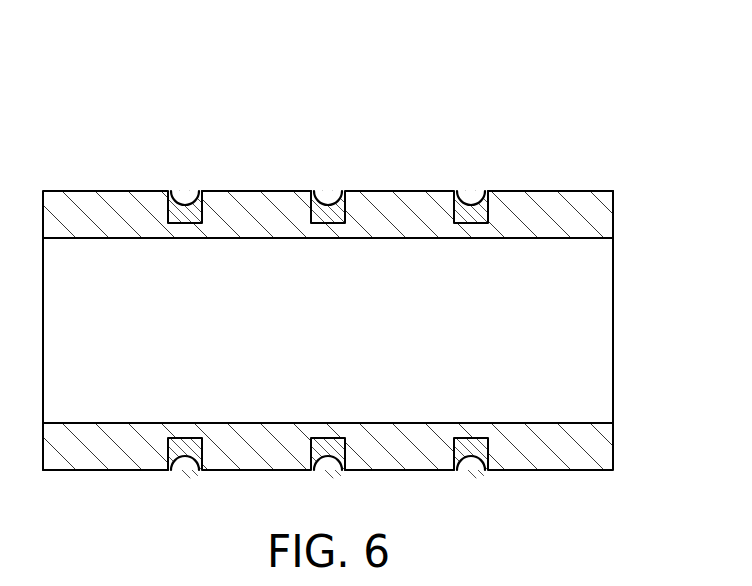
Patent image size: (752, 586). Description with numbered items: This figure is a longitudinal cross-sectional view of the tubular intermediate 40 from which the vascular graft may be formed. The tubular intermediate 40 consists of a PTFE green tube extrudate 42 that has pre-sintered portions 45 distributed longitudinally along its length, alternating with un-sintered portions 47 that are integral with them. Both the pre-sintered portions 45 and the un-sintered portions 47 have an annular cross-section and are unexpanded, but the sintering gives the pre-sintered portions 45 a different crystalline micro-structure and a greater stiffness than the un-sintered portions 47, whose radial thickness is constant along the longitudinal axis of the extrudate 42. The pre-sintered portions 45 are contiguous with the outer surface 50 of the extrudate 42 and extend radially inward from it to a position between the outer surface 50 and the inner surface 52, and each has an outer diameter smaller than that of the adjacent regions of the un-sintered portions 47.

The tubular intermediate 40 is at (115, 120).
The PTFE green tube extrudate 42 is at (605, 218).
The pre-sintered portions 45 is at (185, 205).
The un-sintered portions 47 is at (257, 197).
The outer surface 50 is at (230, 470).
The inner surface 52 is at (145, 238).